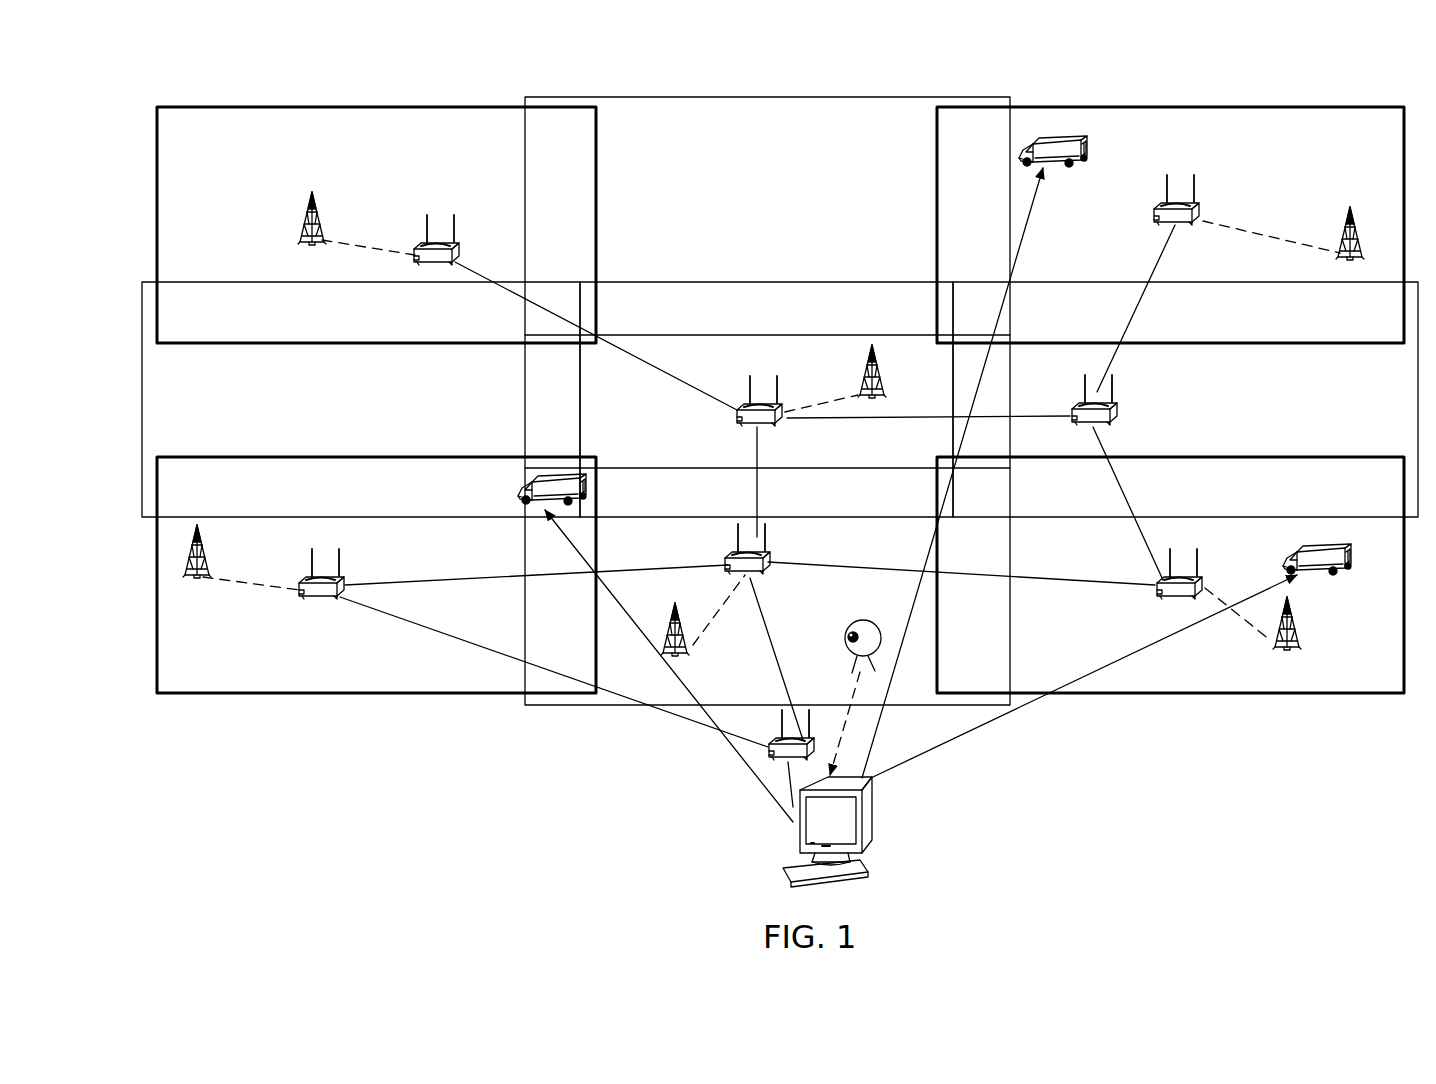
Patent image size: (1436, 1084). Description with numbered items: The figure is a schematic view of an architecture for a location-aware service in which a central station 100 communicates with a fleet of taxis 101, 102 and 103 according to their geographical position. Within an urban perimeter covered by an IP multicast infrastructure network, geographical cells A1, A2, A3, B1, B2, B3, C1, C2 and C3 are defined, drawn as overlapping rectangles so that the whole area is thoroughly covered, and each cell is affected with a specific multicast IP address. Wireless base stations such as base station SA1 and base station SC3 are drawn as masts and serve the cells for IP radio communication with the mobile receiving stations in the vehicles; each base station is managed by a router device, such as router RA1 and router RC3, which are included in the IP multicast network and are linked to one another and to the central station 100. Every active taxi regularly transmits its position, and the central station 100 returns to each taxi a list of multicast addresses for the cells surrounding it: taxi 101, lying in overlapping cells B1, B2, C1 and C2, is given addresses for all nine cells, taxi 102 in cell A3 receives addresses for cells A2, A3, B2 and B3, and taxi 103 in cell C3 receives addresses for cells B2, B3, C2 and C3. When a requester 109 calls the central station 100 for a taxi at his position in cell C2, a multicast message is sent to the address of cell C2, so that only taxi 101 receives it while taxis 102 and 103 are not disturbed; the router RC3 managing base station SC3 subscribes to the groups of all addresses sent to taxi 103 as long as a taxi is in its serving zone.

The central station 100 is at (870, 820).
The taxi 101 is at (520, 486).
The taxi 102 is at (1088, 150).
The taxi 103 is at (1327, 582).
The requester 109 is at (850, 625).
The wireless base station SA1 is at (304, 210).
The router device RA1 is at (446, 243).
The router device RC3 is at (1180, 575).
The wireless base station SC3 is at (1288, 650).
The geographical cell A1 is at (376, 225).
The geographical cell A2 is at (767, 216).
The geographical cell A3 is at (1170, 225).
The geographical cell B1 is at (361, 399).
The geographical cell B2 is at (766, 399).
The geographical cell B3 is at (1185, 399).
The geographical cell C1 is at (376, 575).
The geographical cell C2 is at (767, 586).
The geographical cell C3 is at (1170, 575).